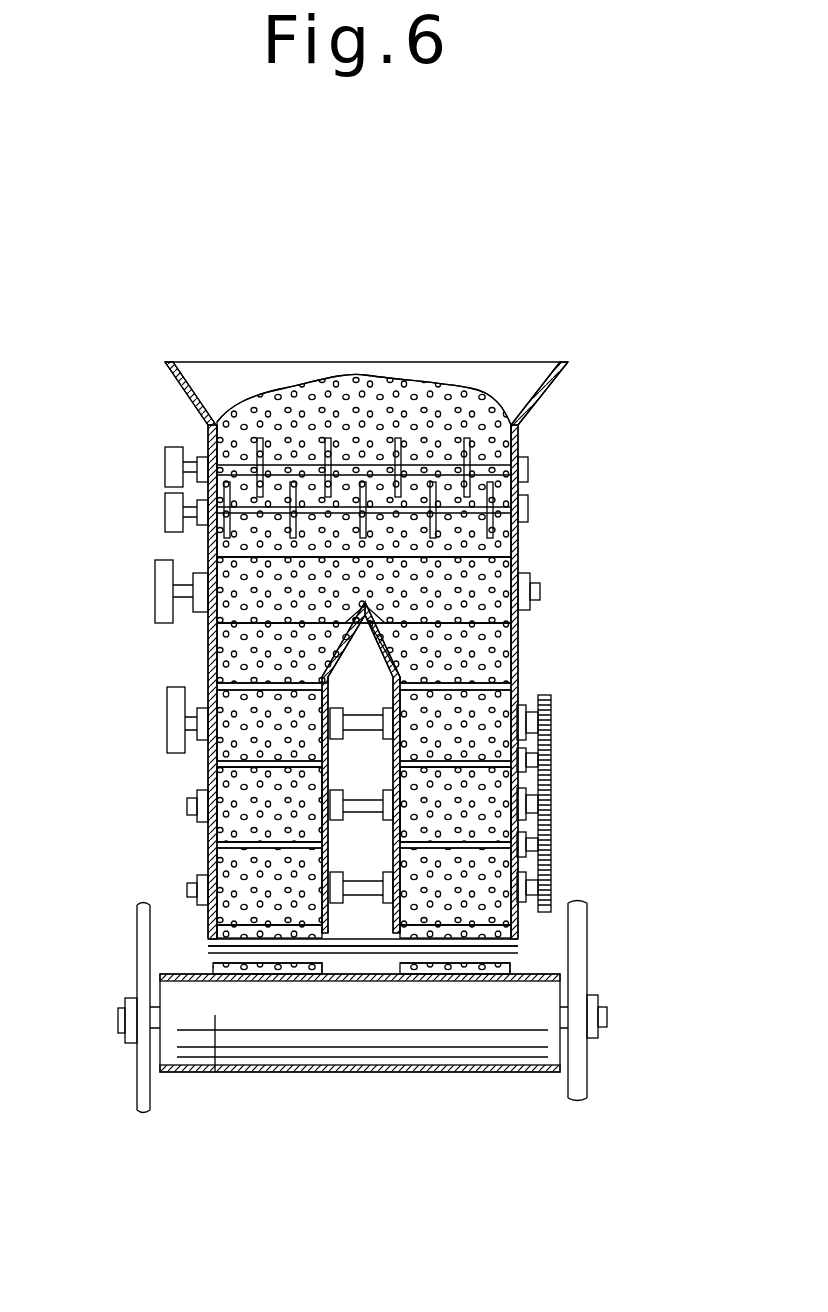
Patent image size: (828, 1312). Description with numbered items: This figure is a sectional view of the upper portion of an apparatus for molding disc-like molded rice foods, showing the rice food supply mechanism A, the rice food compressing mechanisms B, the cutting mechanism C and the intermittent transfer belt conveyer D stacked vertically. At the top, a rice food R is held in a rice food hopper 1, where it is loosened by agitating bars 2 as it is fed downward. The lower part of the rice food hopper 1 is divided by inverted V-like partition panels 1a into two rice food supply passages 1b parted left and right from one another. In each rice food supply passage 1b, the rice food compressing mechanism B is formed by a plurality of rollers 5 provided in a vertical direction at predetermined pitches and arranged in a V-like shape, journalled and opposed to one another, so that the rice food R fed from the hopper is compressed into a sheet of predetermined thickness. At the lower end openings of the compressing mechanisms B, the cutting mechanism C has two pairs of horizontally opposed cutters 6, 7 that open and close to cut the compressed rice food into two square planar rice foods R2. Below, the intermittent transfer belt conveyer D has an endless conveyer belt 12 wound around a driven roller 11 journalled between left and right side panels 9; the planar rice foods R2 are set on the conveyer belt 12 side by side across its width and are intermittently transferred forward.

The rice food hopper 1 is at (556, 398).
The inverted V-like partition panel 1a is at (335, 645).
The rice food supply passage 1b is at (217, 787).
The agitating bar 2 is at (460, 507).
The roller 5 is at (237, 686).
The cutter 6 is at (210, 946).
The cutter 7 is at (517, 943).
The side panel 9 is at (137, 1088).
The driven roller 11 is at (215, 1072).
The endless conveyer belt 12 is at (367, 1072).
The rice food supply mechanism A is at (273, 358).
The rice food R is at (357, 405).
The rice food compressing mechanism B is at (262, 818).
The cutting mechanism C is at (523, 953).
The intermittent transfer belt conveyer D is at (422, 1075).
The planar rice food R2 is at (285, 963).